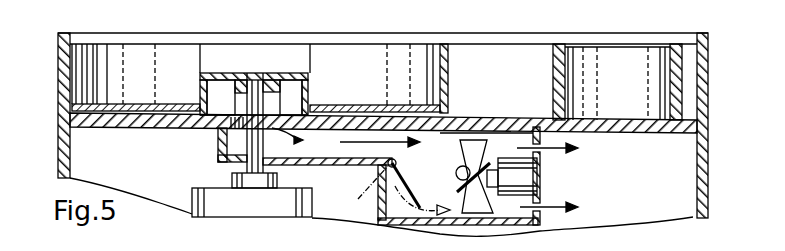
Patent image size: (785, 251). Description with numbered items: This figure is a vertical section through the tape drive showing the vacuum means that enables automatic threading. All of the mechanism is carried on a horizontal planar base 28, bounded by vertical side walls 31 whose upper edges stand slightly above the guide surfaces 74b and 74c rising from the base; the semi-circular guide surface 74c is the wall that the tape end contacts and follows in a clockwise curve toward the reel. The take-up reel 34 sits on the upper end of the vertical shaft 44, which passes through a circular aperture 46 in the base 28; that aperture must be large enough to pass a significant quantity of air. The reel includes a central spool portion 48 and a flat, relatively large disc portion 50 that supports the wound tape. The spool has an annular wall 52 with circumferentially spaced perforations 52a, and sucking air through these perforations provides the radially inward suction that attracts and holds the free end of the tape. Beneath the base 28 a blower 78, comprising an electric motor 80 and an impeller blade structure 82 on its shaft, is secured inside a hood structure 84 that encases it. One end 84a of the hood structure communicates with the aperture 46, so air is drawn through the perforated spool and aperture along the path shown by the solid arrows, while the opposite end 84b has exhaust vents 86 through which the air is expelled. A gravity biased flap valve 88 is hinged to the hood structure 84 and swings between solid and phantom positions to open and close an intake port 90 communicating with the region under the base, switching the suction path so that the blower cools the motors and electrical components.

The base 28 is at (115, 129).
The side walls 31 is at (58, 83).
The take-up reel 34 is at (368, 98).
The vertical shaft 44 is at (255, 85).
The circular aperture 46 is at (213, 128).
The central spool portion 48 is at (230, 72).
The disc portion 50 is at (146, 103).
The annular wall 52 is at (282, 97).
The perforations 52a is at (200, 95).
The guide surface 74b is at (613, 58).
The semi-circular guide surface 74c is at (104, 50).
The blower 78 is at (509, 142).
The electric motor 80 is at (517, 172).
The impeller blade structure 82 is at (478, 141).
The hood structure 84 is at (311, 165).
The hood structure end 84a is at (220, 142).
The hood structure opposite end 84b is at (540, 180).
The exhaust vents 86 is at (578, 146).
The flap valve 88 is at (404, 189).
The intake port 90 is at (391, 192).